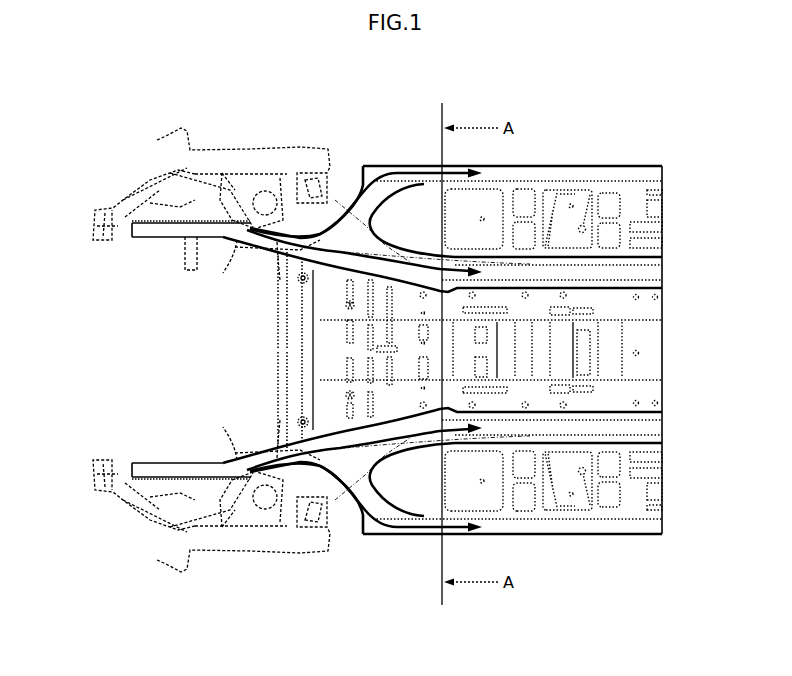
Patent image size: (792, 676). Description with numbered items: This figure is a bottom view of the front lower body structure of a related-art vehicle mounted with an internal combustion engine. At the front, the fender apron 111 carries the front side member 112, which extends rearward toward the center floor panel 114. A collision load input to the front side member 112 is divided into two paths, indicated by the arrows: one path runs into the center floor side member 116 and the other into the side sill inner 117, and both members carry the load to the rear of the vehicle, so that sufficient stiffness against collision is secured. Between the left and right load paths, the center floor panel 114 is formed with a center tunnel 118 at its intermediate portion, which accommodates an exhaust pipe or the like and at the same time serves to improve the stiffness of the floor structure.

The fender apron 111 is at (208, 162).
The front side member 112 is at (238, 243).
The center floor panel 114 is at (622, 182).
The center floor side member 116 is at (620, 290).
The side sill inner 117 is at (567, 165).
The center tunnel 118 is at (640, 368).